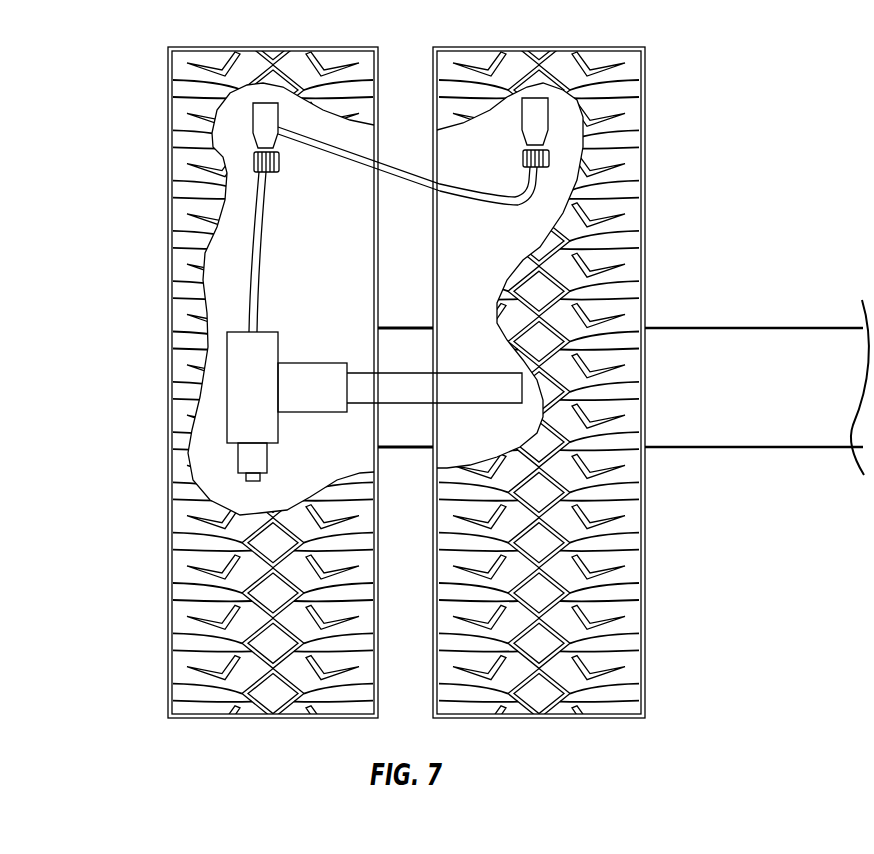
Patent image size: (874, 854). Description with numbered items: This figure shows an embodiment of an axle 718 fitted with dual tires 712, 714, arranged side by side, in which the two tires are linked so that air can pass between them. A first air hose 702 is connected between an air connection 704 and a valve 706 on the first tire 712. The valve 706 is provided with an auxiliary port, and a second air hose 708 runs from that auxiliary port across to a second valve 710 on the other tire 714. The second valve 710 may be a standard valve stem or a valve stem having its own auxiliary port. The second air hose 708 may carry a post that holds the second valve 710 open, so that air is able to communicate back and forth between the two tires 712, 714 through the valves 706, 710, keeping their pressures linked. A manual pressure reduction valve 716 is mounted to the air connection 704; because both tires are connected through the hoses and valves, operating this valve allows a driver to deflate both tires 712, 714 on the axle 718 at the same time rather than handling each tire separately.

The first air hose 702 is at (250, 261).
The air connection 704 is at (227, 387).
The valve 706 is at (265, 101).
The second air hose 708 is at (540, 191).
The second valve 710 is at (548, 117).
The tire 712 is at (322, 48).
The tire 714 is at (538, 48).
The manual pressure reduction valve 716 is at (240, 457).
The axle 718 is at (758, 328).